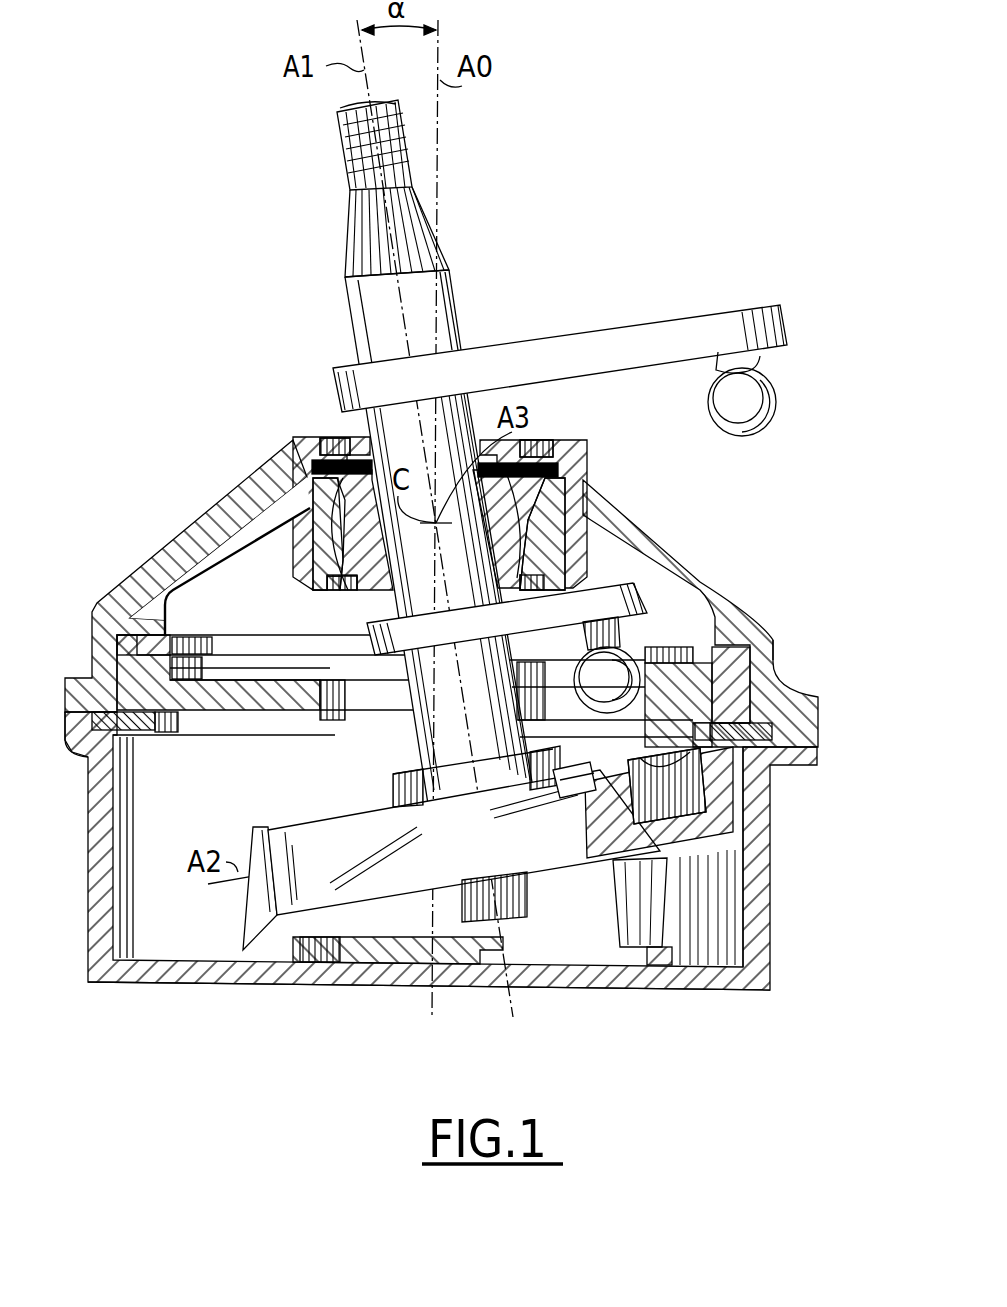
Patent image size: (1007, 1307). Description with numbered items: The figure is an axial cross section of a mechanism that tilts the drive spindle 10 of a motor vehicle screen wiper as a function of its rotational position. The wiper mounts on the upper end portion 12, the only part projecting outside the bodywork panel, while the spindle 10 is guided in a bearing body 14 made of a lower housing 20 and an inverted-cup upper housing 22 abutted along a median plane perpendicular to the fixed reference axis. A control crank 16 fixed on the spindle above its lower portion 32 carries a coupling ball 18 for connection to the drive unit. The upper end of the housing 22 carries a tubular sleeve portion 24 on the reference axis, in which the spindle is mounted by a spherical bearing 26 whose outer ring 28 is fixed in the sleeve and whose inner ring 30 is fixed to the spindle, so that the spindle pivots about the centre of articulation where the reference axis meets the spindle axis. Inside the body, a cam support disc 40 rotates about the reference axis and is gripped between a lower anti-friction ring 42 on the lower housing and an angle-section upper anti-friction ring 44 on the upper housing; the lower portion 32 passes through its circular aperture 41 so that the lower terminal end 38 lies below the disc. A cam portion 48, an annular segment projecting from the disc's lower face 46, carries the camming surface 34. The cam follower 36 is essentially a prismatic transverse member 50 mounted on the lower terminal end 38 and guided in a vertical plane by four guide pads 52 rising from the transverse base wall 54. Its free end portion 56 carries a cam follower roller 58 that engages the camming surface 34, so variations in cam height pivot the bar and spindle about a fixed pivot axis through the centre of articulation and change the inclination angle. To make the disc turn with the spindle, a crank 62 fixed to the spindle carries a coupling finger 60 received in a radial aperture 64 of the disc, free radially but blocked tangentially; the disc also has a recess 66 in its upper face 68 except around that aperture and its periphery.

The drive spindle 10 is at (430, 304).
The upper end portion 12 is at (372, 215).
The bearing body 14 is at (808, 667).
The control crank 16 is at (655, 330).
The coupling ball 18 is at (760, 384).
The lower housing 20 is at (705, 985).
The upper housing 22 is at (665, 555).
The tubular sleeve portion 24 is at (305, 527).
The spherical bearing 26 is at (541, 425).
The outer ring 28 is at (585, 475).
The inner ring 30 is at (348, 470).
The lower portion 32 is at (420, 710).
The camming surface 34 is at (640, 762).
The cam follower 36 is at (700, 850).
The lower terminal end 38 is at (520, 882).
The cam support disc 40 is at (112, 662).
The circular aperture 41 is at (332, 735).
The lower anti-friction ring 42 is at (85, 714).
The upper anti-friction ring 44 is at (90, 694).
The lower face 46 is at (243, 740).
The cam portion 48 is at (735, 640).
The transverse member 50 is at (290, 950).
The guide pads 52 is at (660, 900).
The transverse base wall 54 is at (185, 985).
The free end portion 56 is at (735, 830).
The cam follower roller 58 is at (740, 778).
The coupling finger 60 is at (625, 652).
The crank 62 is at (663, 592).
The radial aperture 64 is at (560, 697).
The recess 66 is at (222, 636).
The upper face 68 is at (284, 636).